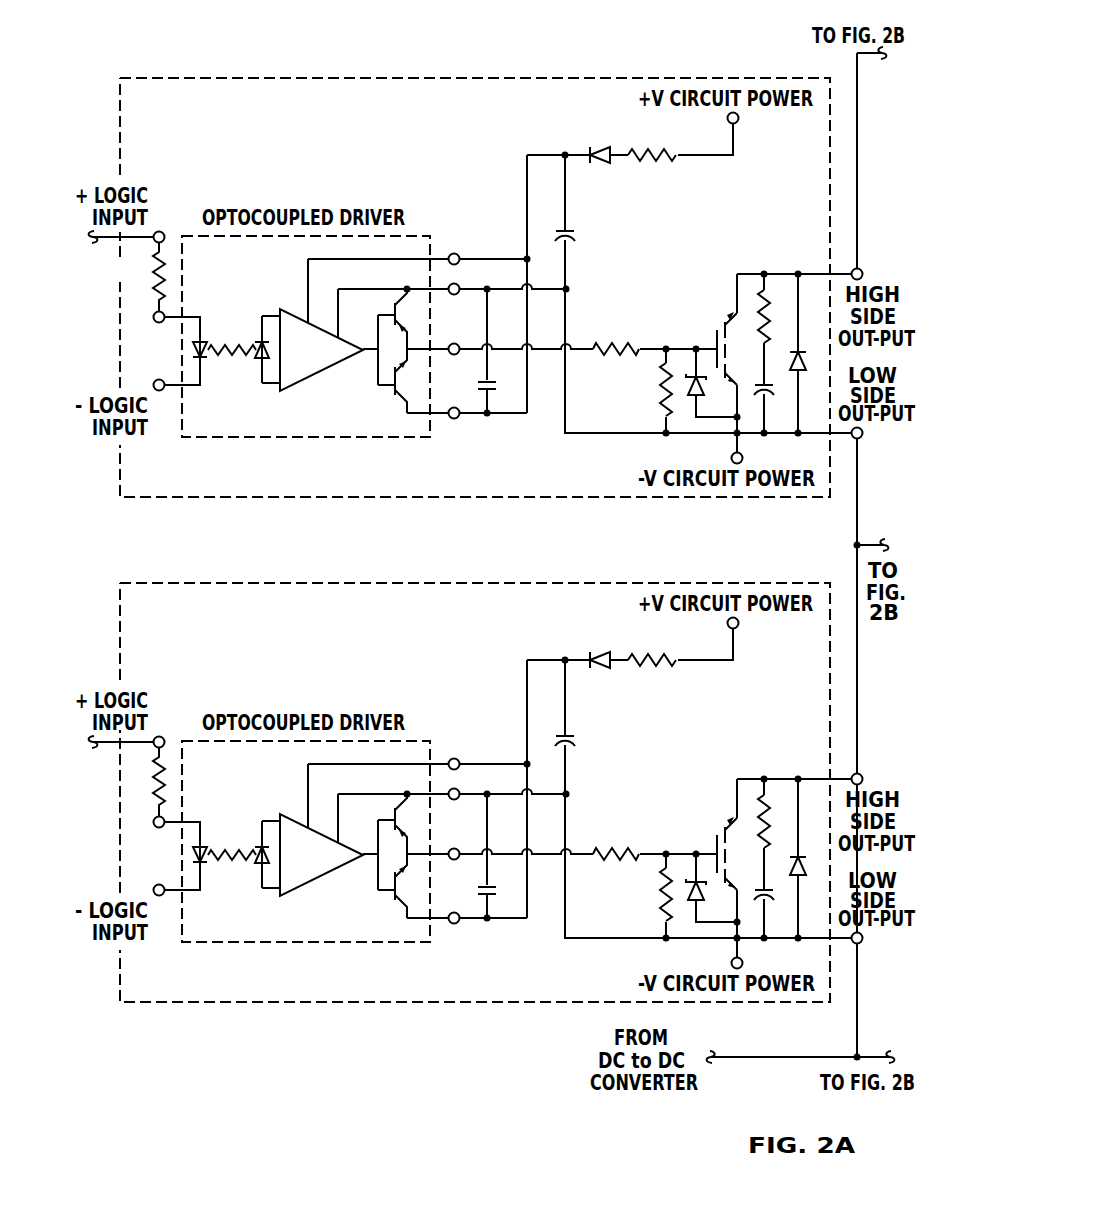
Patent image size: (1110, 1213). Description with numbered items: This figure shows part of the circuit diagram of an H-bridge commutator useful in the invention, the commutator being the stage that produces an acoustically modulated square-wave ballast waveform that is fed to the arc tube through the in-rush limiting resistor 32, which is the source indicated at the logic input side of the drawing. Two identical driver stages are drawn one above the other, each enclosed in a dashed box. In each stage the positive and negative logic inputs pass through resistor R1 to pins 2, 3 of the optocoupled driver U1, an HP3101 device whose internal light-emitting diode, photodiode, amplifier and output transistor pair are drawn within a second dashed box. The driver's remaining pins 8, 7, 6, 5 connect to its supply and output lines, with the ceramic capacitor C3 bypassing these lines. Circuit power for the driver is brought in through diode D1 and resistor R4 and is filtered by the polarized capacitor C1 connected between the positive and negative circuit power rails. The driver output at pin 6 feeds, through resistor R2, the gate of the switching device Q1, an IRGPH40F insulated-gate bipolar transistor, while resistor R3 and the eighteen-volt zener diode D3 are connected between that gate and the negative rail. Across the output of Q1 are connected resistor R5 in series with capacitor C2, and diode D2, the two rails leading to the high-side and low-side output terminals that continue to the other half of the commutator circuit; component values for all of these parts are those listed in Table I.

The resistor 32 is at (107, 517).
The resistor R1 is at (145, 529).
The optocoupler pin 2 (LED anode) 2 is at (166, 580).
The optocoupler pin 3 (LED cathode) 3 is at (166, 649).
The optocoupled driver U1 is at (300, 603).
The optocoupler pin 8 (Vcc) 8 is at (461, 524).
The optocoupler pin 7 is at (461, 552).
The optocoupler pin 6 (output) 6 is at (461, 614).
The optocoupler pin 5 (Vee) 5 is at (461, 678).
The capacitor C3 is at (498, 649).
The diode D1 is at (601, 394).
The resistor R4 is at (652, 422).
The capacitor C1 is at (578, 483).
The resistor R2 is at (616, 589).
The resistor R3 is at (651, 642).
The zener diode D3 is at (706, 648).
The transistor Q1 is at (734, 601).
The resistor R5 is at (776, 563).
The capacitor C2 is at (774, 655).
The diode D2 is at (808, 626).